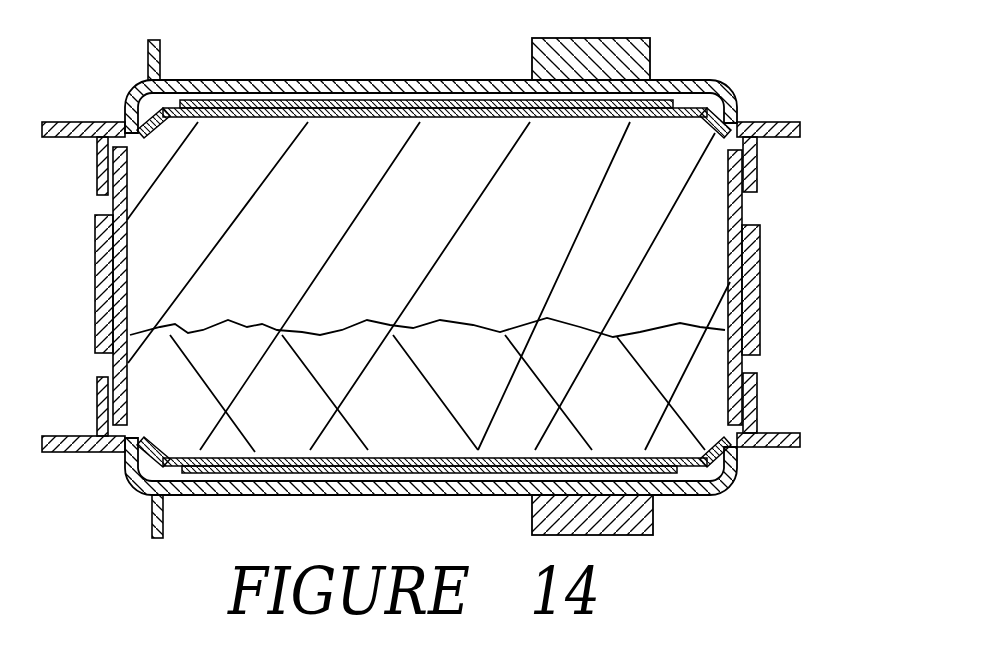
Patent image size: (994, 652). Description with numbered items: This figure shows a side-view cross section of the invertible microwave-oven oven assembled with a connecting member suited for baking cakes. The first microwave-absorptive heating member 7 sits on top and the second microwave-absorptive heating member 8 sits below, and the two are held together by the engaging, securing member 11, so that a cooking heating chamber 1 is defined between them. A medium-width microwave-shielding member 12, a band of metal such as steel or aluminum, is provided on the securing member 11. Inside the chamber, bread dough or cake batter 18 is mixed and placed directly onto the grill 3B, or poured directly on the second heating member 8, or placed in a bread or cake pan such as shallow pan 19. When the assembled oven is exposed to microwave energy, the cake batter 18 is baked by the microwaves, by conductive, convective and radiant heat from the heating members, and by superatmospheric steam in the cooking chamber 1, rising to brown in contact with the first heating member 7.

The first microwave-absorptive heating member 7 is at (499, 69).
The cooking heating chamber 1 is at (498, 247).
The securing member 11 is at (813, 284).
The shallow pan 19 is at (516, 264).
The medium-width microwave-shielding member 12 is at (828, 290).
The cake batter 18 is at (539, 382).
The grill 3B is at (531, 302).
The second microwave-absorptive heating member 8 is at (501, 492).